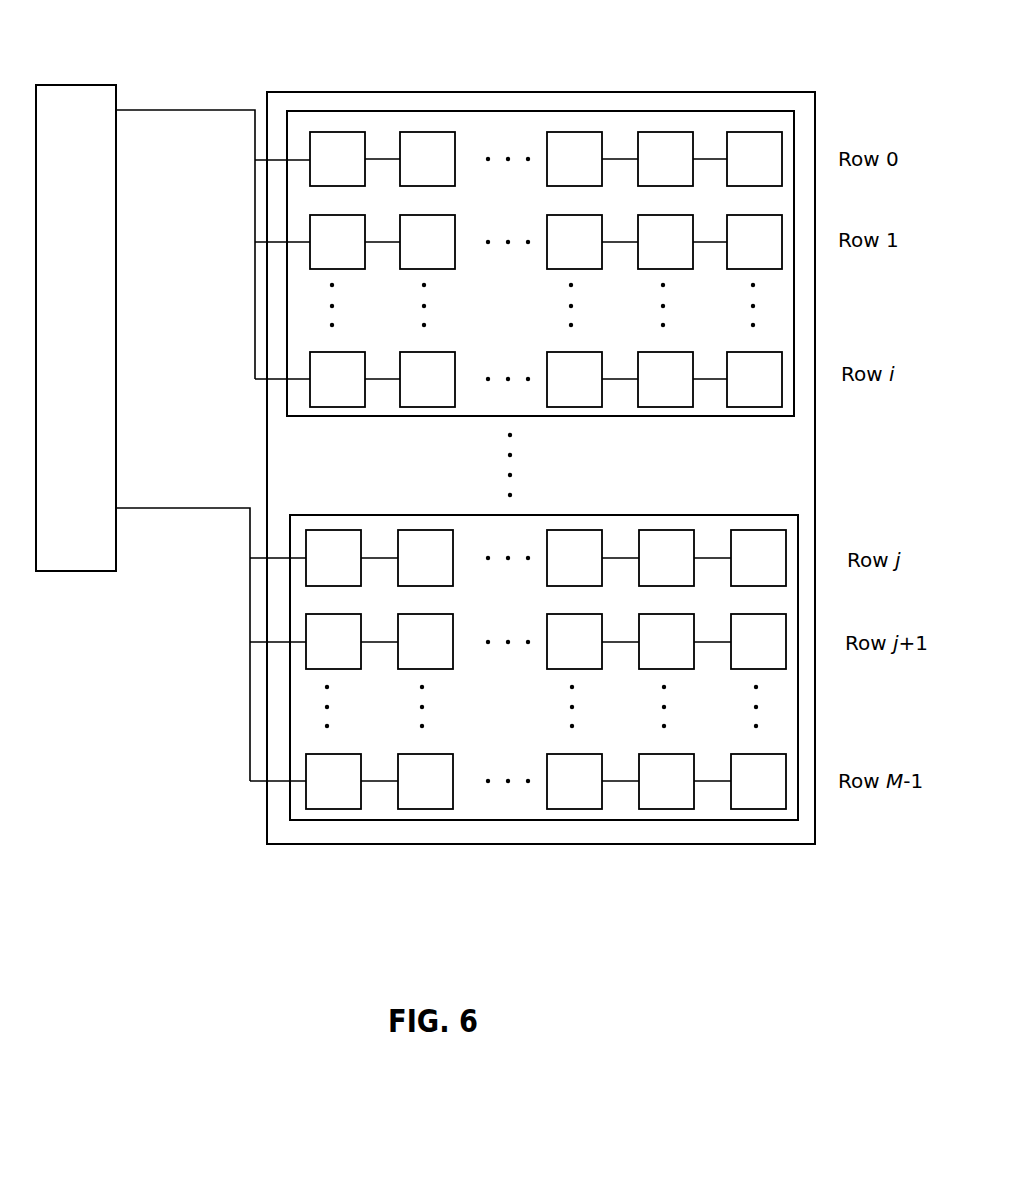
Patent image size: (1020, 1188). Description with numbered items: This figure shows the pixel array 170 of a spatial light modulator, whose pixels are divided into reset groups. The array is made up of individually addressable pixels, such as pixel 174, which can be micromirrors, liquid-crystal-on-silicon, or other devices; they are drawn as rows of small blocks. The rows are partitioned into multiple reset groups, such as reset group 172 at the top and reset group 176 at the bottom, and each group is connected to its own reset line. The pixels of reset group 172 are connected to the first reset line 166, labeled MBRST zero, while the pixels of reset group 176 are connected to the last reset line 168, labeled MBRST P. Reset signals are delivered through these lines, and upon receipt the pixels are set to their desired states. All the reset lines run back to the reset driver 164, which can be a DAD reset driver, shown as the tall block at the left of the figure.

The reset driver 164 is at (76, 85).
The reset line MBRST 0 166 is at (193, 110).
The reset line MBRST P 168 is at (161, 508).
The pixel array 170 is at (360, 92).
The reset group 172 is at (660, 111).
The pixel 174 is at (570, 143).
The reset group 176 is at (610, 515).